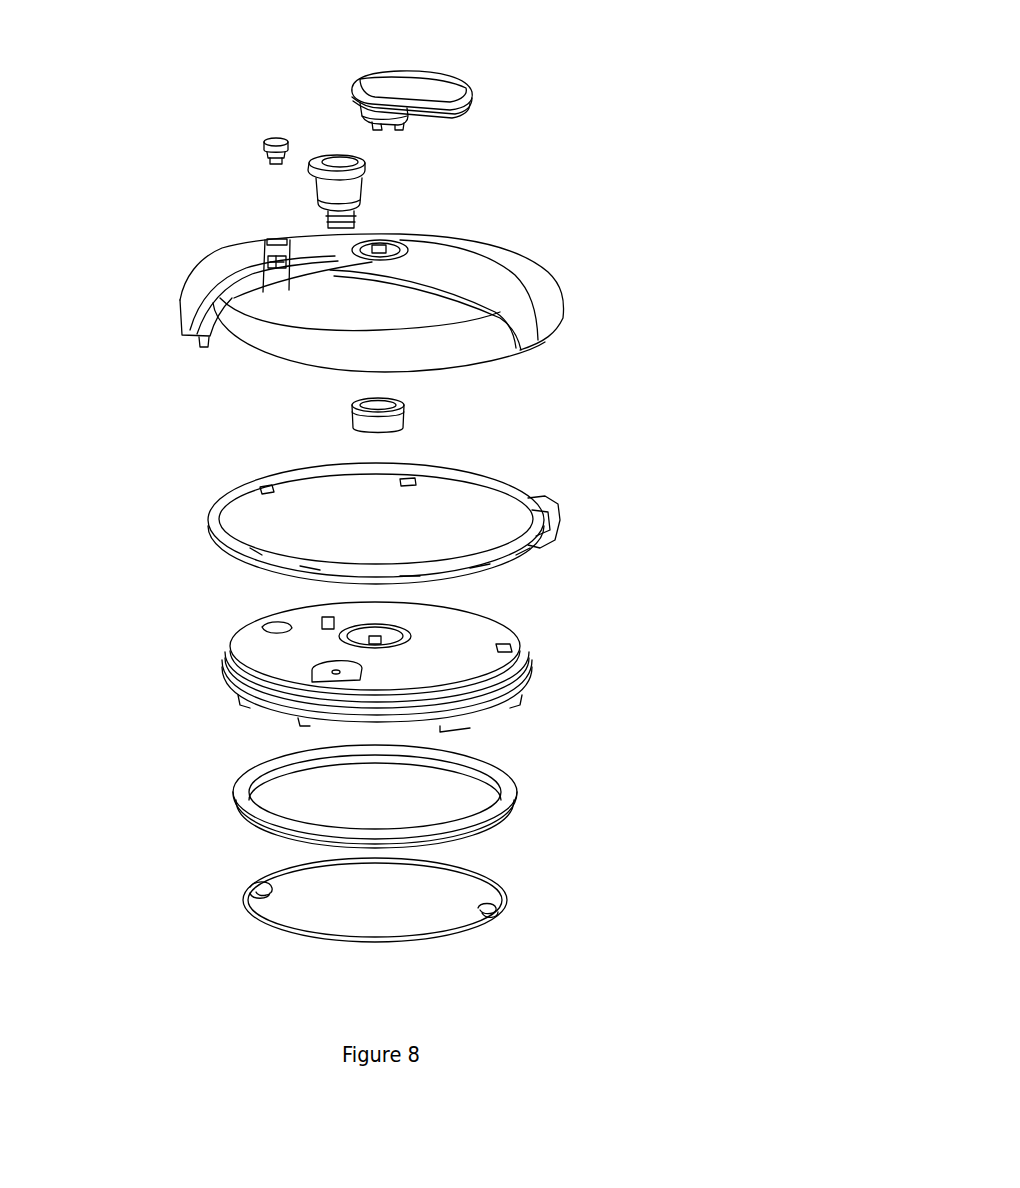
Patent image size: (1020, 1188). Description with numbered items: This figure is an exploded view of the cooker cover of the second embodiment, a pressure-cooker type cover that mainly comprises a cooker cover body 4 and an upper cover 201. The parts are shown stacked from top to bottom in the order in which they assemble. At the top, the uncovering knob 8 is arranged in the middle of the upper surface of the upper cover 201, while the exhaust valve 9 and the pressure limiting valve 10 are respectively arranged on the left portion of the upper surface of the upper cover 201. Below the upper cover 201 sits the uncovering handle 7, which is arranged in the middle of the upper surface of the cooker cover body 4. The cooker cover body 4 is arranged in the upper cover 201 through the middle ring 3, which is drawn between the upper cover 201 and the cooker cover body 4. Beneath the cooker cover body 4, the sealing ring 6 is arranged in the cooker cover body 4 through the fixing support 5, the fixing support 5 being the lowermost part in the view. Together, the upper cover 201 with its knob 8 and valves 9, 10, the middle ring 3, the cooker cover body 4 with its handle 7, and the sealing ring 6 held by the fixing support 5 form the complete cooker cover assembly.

The uncovering knob 8 is at (465, 76).
The exhaust valve 9 is at (262, 142).
The pressure limiting valve 10 is at (370, 210).
The upper cover 201 is at (542, 345).
The uncovering handle 7 is at (355, 415).
The middle ring 3 is at (560, 515).
The cooker cover body 4 is at (272, 650).
The sealing ring 6 is at (515, 805).
The fixing support 5 is at (263, 885).